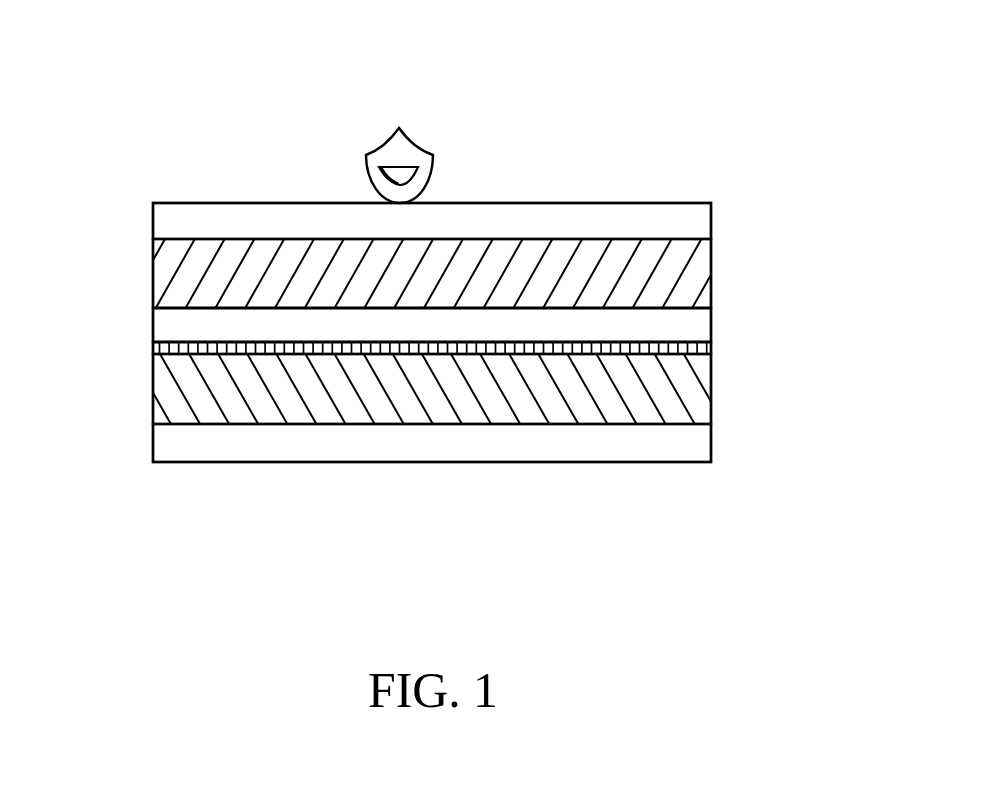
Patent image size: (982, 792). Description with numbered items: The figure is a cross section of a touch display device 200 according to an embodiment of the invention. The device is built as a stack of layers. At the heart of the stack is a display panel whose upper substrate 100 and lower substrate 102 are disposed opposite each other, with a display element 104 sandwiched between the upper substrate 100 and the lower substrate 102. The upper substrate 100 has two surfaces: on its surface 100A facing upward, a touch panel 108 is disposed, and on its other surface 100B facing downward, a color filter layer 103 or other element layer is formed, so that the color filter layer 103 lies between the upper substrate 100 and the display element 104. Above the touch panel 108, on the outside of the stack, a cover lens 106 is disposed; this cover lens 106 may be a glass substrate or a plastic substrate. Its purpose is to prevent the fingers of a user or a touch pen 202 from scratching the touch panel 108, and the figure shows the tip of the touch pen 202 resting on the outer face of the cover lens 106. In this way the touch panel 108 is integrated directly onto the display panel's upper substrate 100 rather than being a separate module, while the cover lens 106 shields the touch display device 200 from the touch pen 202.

The touch display device 200 is at (733, 116).
The touch pen 202 is at (413, 138).
The cover lens 106 is at (695, 216).
The touch panel 108 is at (695, 268).
The upper substrate 100 is at (695, 316).
The surface 100A is at (197, 302).
The another surface 100B is at (197, 350).
The color filter layer 103 is at (700, 345).
The display element 104 is at (695, 388).
The lower substrate 102 is at (695, 443).